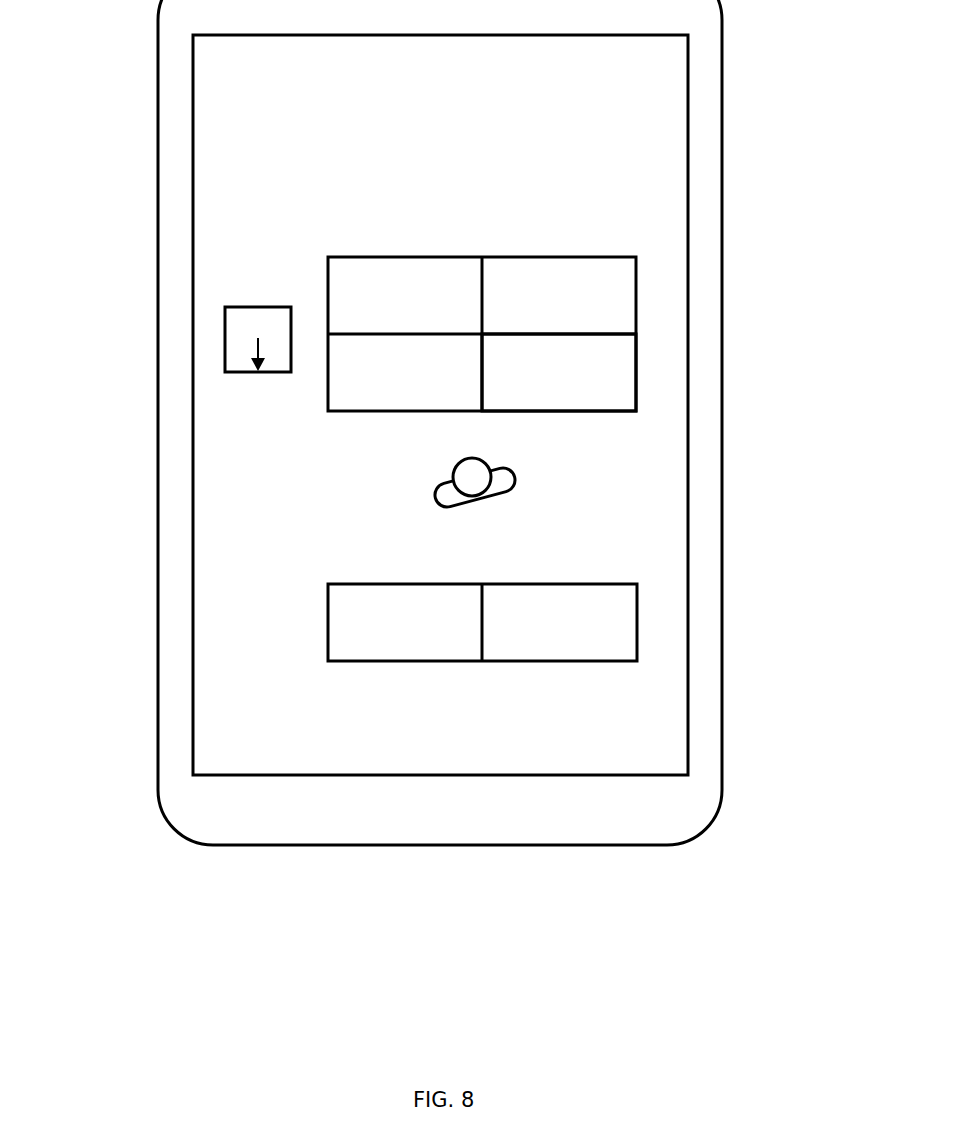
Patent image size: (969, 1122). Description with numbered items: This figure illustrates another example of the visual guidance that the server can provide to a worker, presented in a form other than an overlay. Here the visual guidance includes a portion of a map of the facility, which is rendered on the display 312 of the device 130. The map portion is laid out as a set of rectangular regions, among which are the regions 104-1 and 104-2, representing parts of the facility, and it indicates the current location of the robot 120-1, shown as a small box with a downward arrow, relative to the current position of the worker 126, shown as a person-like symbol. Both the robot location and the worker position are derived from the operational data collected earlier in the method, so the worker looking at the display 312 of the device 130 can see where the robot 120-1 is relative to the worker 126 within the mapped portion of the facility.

The device 130 is at (723, 226).
The display 312 is at (628, 167).
The second content item grid 104-2 is at (347, 280).
The first content item 104-1 is at (624, 364).
The robot 120-1 is at (225, 337).
The worker 126 is at (510, 470).